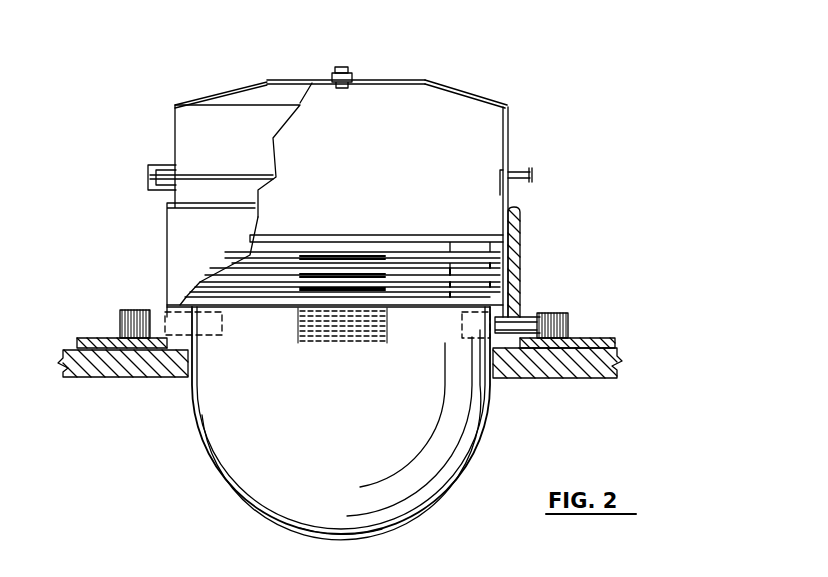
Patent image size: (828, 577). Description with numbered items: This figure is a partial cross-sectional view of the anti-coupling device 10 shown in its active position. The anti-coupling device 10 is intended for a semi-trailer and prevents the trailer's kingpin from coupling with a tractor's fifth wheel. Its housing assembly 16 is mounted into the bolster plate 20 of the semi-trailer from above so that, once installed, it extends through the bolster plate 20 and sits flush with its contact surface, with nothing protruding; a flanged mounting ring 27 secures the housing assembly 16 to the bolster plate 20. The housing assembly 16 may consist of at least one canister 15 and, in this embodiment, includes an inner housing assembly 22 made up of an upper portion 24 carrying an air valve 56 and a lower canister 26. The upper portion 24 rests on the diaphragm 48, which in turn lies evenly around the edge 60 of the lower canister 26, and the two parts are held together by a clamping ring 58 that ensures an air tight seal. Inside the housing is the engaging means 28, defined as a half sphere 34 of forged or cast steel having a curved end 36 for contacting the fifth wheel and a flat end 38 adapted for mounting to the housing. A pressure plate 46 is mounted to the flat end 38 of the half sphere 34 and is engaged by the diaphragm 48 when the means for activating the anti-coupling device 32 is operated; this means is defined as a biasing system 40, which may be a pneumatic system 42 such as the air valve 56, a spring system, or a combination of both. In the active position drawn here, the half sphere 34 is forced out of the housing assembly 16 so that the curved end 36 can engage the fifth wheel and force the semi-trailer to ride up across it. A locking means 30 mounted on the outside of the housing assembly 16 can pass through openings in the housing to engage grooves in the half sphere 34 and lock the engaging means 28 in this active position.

The anti-coupling device 10 is at (488, 76).
The canister 15 is at (173, 141).
The housing assembly 16 is at (520, 276).
The bolster plate 20 is at (533, 365).
The inner housing assembly 22 is at (499, 103).
The upper portion 24 is at (180, 101).
The lower canister 26 is at (193, 192).
The flanged mounting ring 27 is at (106, 345).
The engaging means 28 is at (203, 425).
The locking means 30 is at (570, 330).
The means for activating the anti-coupling device 32 is at (410, 98).
The half sphere 34 is at (238, 471).
The curved end 36 is at (333, 534).
The flat end 38 is at (192, 291).
The biasing system 40 is at (482, 133).
The pneumatic system 42 is at (353, 77).
The pressure plate 46 is at (520, 247).
The diaphragm 48 is at (520, 210).
The air valve 56 is at (337, 64).
The clamping ring 58 is at (152, 192).
The edge 60 is at (518, 172).